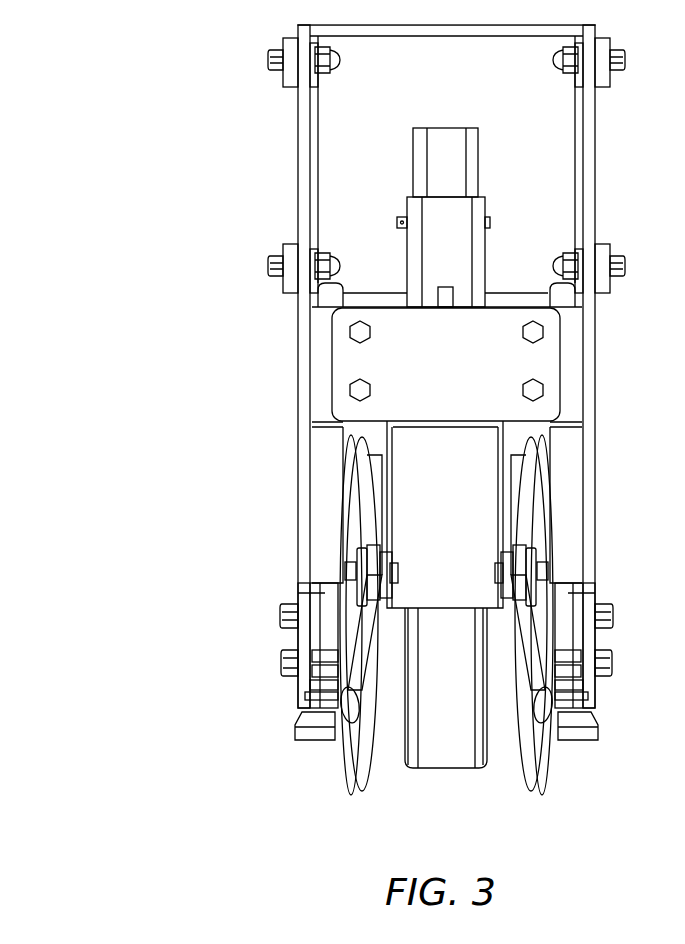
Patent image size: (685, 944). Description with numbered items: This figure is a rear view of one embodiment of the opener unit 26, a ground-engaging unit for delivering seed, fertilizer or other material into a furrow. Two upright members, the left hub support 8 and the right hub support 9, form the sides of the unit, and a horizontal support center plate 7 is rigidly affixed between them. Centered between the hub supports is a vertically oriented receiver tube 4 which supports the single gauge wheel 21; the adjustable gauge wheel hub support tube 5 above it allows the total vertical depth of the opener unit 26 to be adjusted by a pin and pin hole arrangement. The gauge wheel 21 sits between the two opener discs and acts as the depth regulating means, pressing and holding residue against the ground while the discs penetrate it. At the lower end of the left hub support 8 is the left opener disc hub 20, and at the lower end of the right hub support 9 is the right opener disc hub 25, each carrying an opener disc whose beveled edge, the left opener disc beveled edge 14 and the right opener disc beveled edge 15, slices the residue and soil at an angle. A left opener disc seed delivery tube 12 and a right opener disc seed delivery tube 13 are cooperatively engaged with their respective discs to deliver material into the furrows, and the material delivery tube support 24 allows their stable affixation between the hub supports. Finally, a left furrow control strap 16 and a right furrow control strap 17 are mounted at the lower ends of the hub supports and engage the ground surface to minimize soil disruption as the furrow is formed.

The opener unit 26 is at (98, 100).
The left hub support 8 is at (309, 97).
The right hub support 9 is at (596, 108).
The adjustable gauge wheel hub support tube 5 is at (445, 127).
The receiver tube 4 is at (408, 196).
The horizontal support center plate 7 is at (370, 356).
The gauge wheel 21 is at (447, 752).
The material delivery tube support 24 is at (450, 593).
The left opener disc beveled edge 14 is at (348, 795).
The right opener disc beveled edge 15 is at (546, 795).
The left opener disc seed delivery tube 12 is at (352, 712).
The right opener disc seed delivery tube 13 is at (545, 712).
The left opener disc hub 20 is at (330, 593).
The right opener disc hub 25 is at (567, 596).
The left furrow control strap 16 is at (310, 740).
The right furrow control strap 17 is at (581, 742).